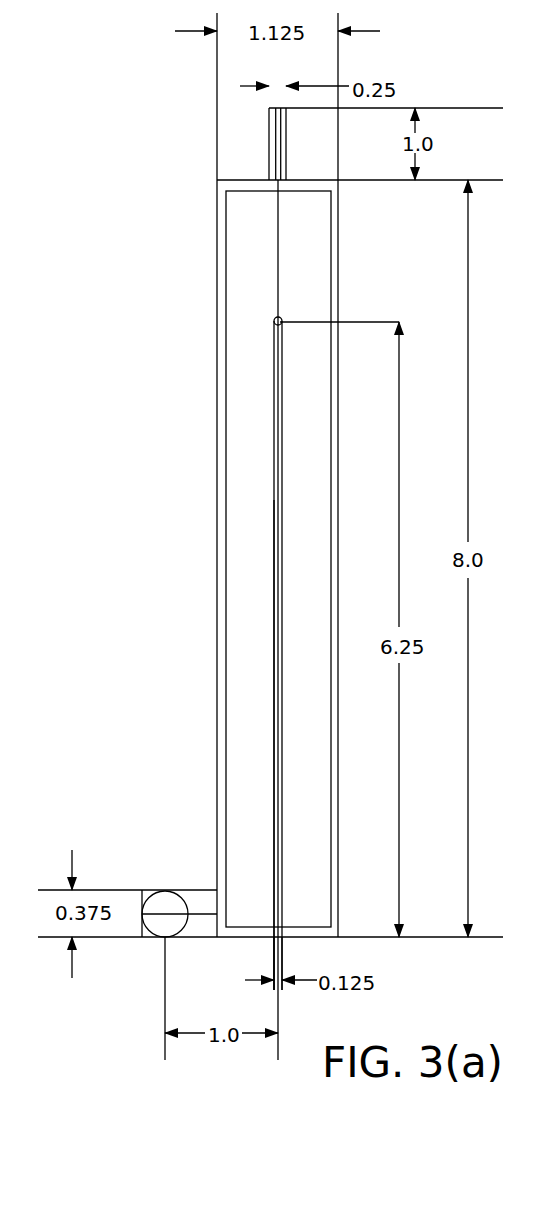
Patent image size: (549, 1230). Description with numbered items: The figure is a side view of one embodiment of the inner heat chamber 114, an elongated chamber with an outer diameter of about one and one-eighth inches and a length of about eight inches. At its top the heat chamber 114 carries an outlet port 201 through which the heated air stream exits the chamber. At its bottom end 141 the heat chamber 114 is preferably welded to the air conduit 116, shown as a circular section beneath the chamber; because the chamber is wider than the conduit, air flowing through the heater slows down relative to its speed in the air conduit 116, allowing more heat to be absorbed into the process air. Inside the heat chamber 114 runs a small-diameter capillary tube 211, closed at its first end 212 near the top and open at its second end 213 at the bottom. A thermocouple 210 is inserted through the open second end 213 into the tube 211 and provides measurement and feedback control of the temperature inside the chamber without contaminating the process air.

The inner heat chamber 114 is at (208, 312).
The air conduit 116 is at (160, 925).
The bottom end 141 is at (200, 872).
The outlet port 201 is at (282, 78).
The thermocouple 210 is at (273, 525).
The small-diameter capillary tube 211 is at (260, 730).
The first end 212 is at (284, 312).
The second end 213 is at (284, 941).